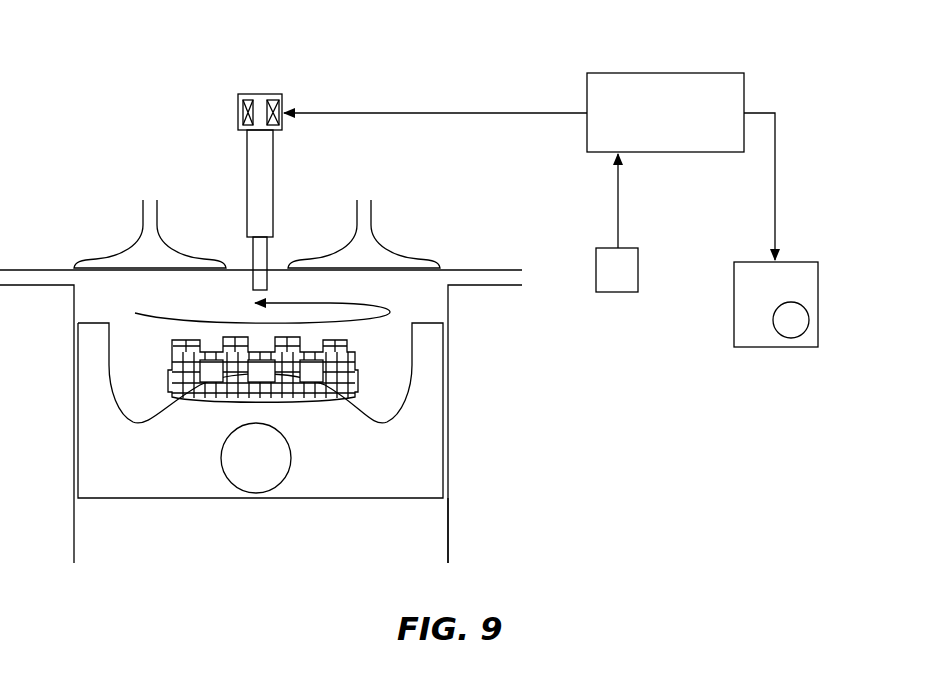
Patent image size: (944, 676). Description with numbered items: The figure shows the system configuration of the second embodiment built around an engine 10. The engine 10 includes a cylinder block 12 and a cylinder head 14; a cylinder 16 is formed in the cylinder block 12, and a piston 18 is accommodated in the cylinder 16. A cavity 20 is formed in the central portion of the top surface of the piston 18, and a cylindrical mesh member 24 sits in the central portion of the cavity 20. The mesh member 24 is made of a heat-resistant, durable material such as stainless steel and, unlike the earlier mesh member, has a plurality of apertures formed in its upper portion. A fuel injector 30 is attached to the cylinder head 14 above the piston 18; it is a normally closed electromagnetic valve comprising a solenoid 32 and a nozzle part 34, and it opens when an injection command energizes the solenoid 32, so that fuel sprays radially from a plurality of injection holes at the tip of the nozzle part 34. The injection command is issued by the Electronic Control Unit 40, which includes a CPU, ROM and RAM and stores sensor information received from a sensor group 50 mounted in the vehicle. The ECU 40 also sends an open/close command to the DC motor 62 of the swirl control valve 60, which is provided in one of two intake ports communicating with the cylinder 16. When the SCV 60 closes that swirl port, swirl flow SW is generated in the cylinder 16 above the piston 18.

The engine 10 is at (508, 245).
The cylinder block 12 is at (45, 338).
The cylinder head 14 is at (43, 248).
The cylinder 16 is at (447, 555).
The piston 18 is at (445, 408).
The cavity 20 is at (393, 318).
The cylindrical mesh member 24 is at (356, 376).
The fuel injector 30 is at (293, 91).
The solenoid 32 is at (238, 115).
The nozzle part 34 is at (253, 283).
The Electronic Control Unit (ECU) 40 is at (717, 73).
The sensor group 50 is at (617, 292).
The SCV (Swirl Control Valve) 60 is at (766, 347).
The DC motor 62 is at (791, 338).
The swirl flow SW is at (163, 322).